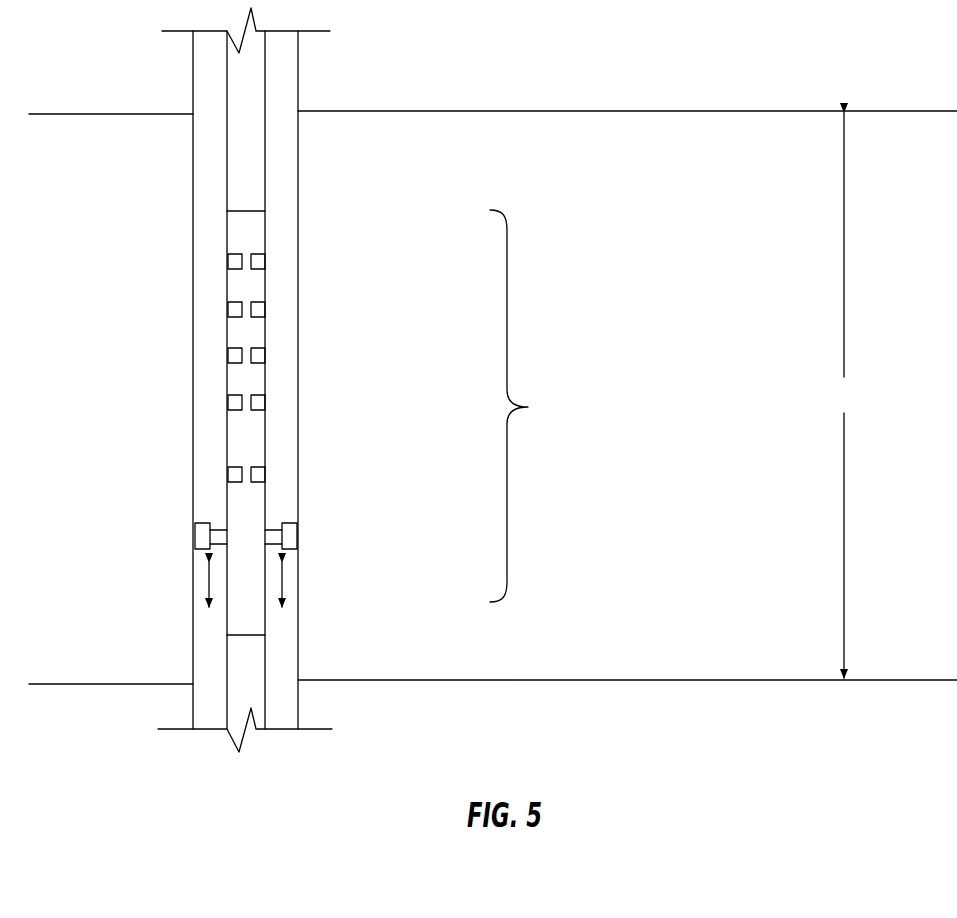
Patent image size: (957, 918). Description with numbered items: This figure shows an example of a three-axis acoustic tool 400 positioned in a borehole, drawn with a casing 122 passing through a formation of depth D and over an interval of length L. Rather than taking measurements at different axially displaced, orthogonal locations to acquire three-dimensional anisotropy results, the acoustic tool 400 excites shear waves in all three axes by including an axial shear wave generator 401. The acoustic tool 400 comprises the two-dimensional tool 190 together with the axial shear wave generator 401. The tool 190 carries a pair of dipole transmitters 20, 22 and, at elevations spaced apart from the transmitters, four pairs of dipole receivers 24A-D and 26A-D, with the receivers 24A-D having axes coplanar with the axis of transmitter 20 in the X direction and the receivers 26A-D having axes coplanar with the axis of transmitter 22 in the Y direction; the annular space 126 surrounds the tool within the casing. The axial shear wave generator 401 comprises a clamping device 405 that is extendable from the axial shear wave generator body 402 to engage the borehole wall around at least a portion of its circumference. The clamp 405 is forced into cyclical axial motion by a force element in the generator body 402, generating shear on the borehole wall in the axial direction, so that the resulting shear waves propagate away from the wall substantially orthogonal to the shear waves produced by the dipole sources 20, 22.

The wellbore casing 122 is at (265, 100).
The tool 190 is at (265, 240).
The annulus 126 is at (285, 422).
The dipole receivers 24A-D is at (180, 253).
The dipole receivers 26A-D is at (316, 253).
The transmitter 20 is at (230, 474).
The transmitter 22 is at (262, 474).
The clamping device 405 is at (203, 550).
The axial shear wave generator 401 is at (307, 593).
The axial shear wave generator body 402 is at (247, 610).
The 3-axis acoustic tool 400 is at (536, 406).
The depth D is at (704, 353).
The length L is at (844, 395).